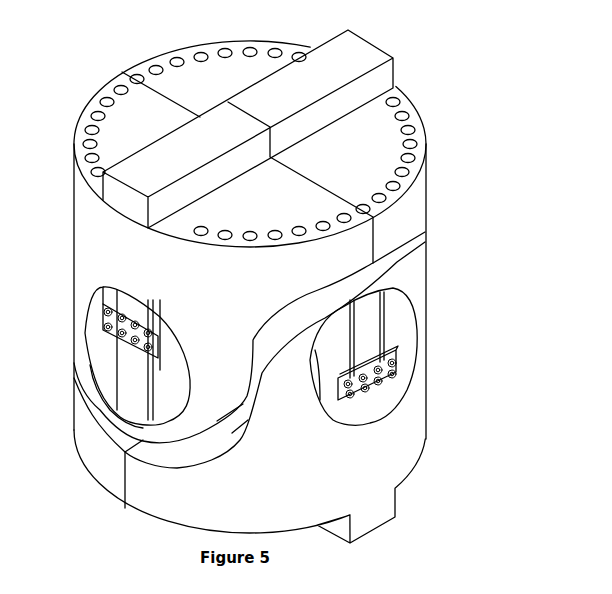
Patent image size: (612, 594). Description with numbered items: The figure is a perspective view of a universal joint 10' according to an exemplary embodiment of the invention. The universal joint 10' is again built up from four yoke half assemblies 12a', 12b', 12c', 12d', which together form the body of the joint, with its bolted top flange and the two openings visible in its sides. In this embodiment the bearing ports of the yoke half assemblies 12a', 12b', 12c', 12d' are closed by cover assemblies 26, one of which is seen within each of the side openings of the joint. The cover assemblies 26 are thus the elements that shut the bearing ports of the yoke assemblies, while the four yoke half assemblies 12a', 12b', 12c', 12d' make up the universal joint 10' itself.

The universal joint 10' is at (258, 277).
The yoke half assembly 12a' is at (145, 113).
The yoke half assembly 12b' is at (305, 126).
The yoke half assembly 12c' is at (120, 390).
The yoke half assembly 12d' is at (396, 378).
The cover assembly 26 is at (104, 360).